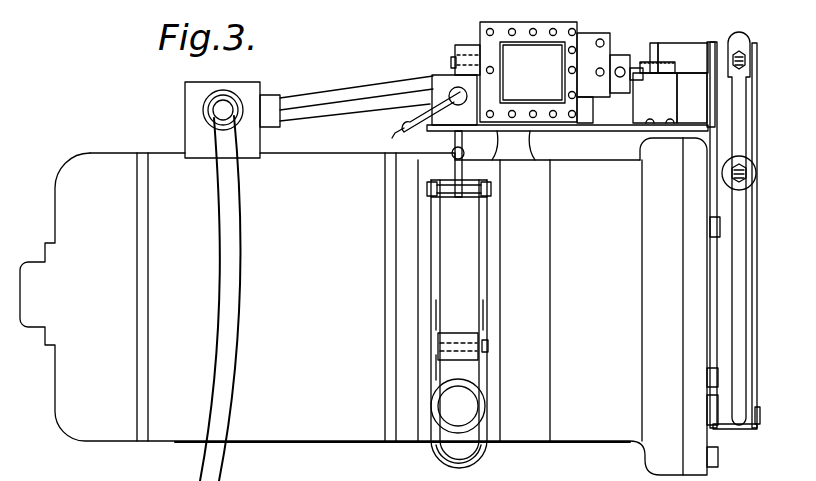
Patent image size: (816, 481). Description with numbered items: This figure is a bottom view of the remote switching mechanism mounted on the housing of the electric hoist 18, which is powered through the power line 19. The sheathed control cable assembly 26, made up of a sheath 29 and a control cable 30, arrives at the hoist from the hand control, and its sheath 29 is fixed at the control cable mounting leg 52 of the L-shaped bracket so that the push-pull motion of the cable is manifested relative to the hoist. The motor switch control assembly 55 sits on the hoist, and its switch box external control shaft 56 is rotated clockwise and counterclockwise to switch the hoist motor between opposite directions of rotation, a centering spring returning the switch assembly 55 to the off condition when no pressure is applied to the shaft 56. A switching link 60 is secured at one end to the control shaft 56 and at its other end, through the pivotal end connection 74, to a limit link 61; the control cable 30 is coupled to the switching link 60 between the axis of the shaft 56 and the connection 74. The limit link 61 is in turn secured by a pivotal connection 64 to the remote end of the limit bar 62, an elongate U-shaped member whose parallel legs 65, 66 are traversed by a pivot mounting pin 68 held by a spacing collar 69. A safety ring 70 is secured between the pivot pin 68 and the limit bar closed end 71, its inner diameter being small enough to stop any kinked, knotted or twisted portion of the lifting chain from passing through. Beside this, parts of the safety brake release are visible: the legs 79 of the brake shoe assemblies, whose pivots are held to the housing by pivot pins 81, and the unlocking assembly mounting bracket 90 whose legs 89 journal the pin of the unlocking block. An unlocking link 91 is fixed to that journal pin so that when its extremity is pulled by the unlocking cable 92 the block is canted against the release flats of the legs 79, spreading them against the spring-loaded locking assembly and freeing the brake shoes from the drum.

The hoist 18 is at (103, 150).
The power line 19 is at (228, 288).
The control cable assembly 26 is at (426, 108).
The sheath 29 is at (740, 32).
The control cable 30 is at (392, 118).
The control cable mounting leg 52 is at (441, 78).
The motor switch control assembly 55 is at (590, 32).
The switch box external control shaft 56 is at (467, 50).
The switching link 60 is at (446, 140).
The limit link 61 is at (463, 168).
The limit bar 62 is at (490, 252).
The pivotal connection 64 is at (470, 190).
The parallel leg 65 is at (490, 318).
The parallel leg 66 is at (440, 312).
The pivot mounting pin 68 is at (490, 350).
The spacing collar 69 is at (440, 366).
The safety ring 70 is at (480, 410).
The limit bar closed end 71 is at (472, 456).
The pivotal end connection 74 is at (440, 164).
The legs 79 is at (747, 130).
The pivot pins 81 is at (759, 425).
The legs 89 is at (709, 42).
The unlocking assembly mounting bracket 90 is at (668, 43).
The unlocking link 91 is at (697, 98).
The unlocking cable 92 is at (645, 43).